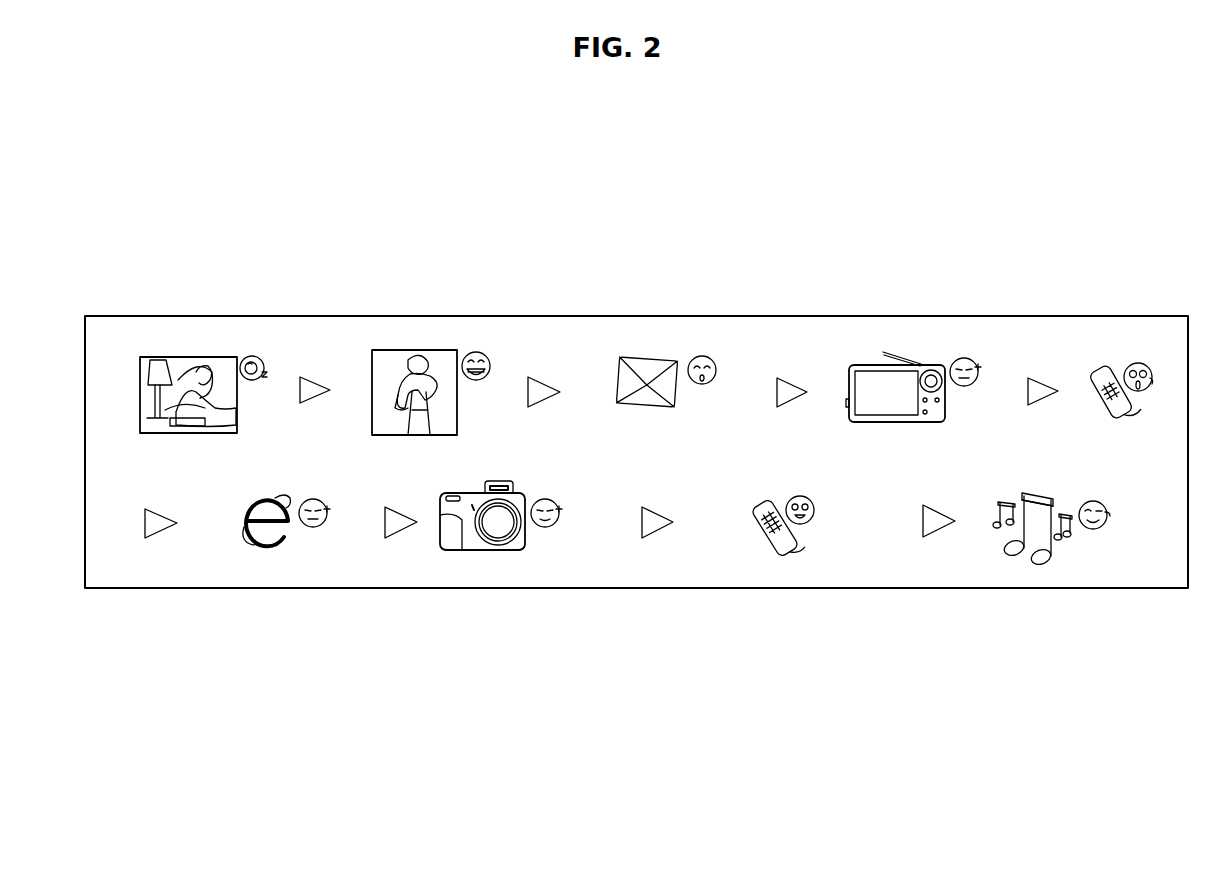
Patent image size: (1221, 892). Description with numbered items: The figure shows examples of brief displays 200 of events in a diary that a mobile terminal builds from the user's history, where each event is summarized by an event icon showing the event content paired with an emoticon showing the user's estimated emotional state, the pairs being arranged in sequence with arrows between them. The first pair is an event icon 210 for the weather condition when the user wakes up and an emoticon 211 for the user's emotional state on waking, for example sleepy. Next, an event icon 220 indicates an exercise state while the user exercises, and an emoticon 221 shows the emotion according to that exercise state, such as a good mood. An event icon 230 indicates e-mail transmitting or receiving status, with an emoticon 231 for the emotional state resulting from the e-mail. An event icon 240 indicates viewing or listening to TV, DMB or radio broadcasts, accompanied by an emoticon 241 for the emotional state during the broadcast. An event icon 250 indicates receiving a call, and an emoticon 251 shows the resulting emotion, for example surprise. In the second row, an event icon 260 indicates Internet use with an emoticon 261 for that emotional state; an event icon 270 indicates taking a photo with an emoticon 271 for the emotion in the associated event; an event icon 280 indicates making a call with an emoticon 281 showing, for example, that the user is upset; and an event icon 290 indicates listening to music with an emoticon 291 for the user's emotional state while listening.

The brief displays 200 is at (1110, 204).
The event icon 210 is at (188, 357).
The emoticon 211 is at (252, 356).
The event icon 220 is at (413, 352).
The emoticon 221 is at (474, 352).
The event icon 230 is at (640, 358).
The emoticon 231 is at (699, 356).
The event icon 240 is at (868, 365).
The emoticon 241 is at (961, 358).
The event icon 250 is at (1096, 368).
The emoticon 251 is at (1137, 363).
The event icon 260 is at (270, 545).
The emoticon 261 is at (313, 528).
The event icon 270 is at (485, 552).
The emoticon 271 is at (545, 528).
The event icon 280 is at (782, 555).
The emoticon 281 is at (800, 525).
The event icon 290 is at (1035, 565).
The emoticon 291 is at (1093, 530).